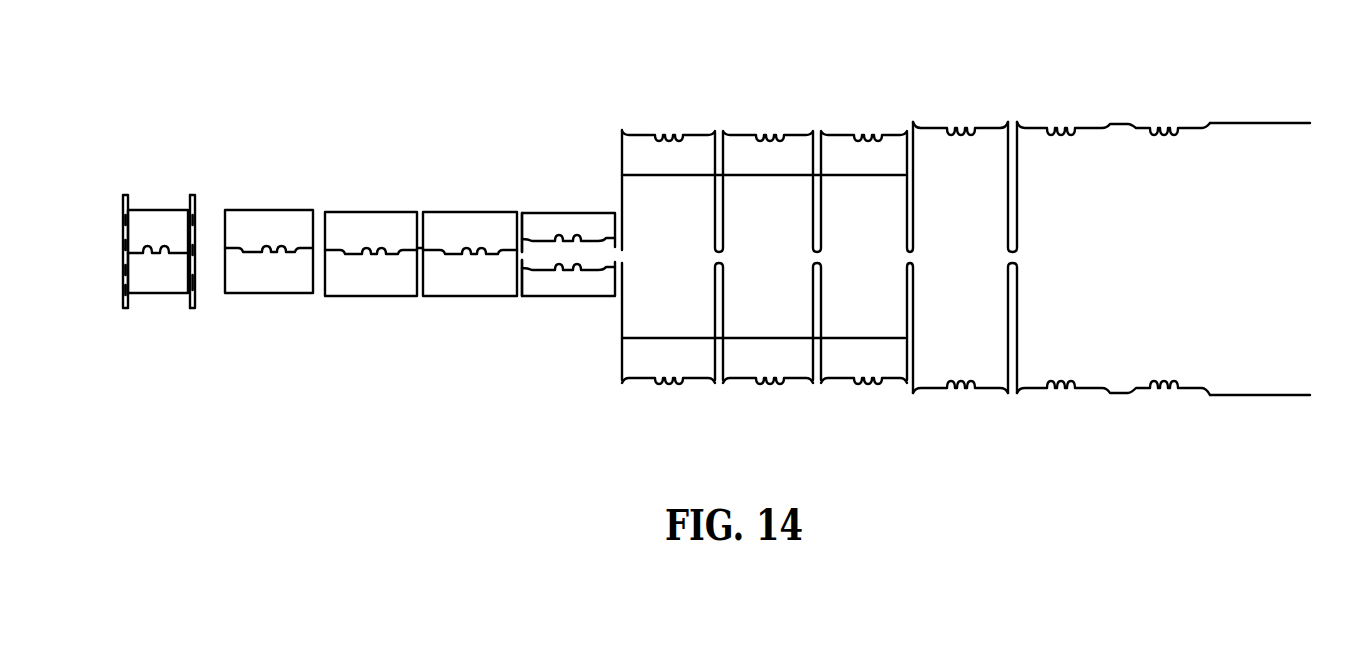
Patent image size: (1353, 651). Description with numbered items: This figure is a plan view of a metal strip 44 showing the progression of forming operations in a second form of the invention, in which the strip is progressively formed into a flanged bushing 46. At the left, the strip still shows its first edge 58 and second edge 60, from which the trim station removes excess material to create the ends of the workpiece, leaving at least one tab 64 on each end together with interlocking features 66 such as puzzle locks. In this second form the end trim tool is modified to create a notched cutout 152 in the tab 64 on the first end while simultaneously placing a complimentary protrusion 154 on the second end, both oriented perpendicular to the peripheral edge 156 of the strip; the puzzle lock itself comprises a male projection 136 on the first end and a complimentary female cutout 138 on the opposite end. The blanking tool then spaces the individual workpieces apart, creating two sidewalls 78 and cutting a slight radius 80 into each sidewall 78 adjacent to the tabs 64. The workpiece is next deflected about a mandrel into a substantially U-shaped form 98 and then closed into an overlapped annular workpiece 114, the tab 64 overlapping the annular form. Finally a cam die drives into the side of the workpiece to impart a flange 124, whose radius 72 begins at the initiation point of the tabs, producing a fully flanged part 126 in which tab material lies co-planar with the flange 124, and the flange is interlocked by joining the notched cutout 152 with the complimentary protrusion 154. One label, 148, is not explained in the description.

The metal strip 44 is at (1272, 57).
The flanged bushing 46 is at (122, 317).
The first edge 58 is at (1277, 122).
The second edge 60 is at (1257, 397).
The tab 64 is at (538, 233).
The interlocking features 66 is at (158, 257).
The flange's radius 72 is at (187, 306).
The sidewall 78 is at (622, 168).
The slight radius 80 is at (1002, 395).
The substantially U-shaped form 98 is at (557, 316).
The overlapped annular workpiece 114 is at (455, 283).
The flange 124 is at (190, 198).
The fully flanged part 126 is at (128, 183).
The male projection 136 is at (577, 267).
The female cutout 138 is at (577, 232).
The wave 148 is at (143, 250).
The notched cutout 152 is at (830, 132).
The complimentary protrusion 154 is at (826, 386).
The peripheral edge 156 is at (927, 394).